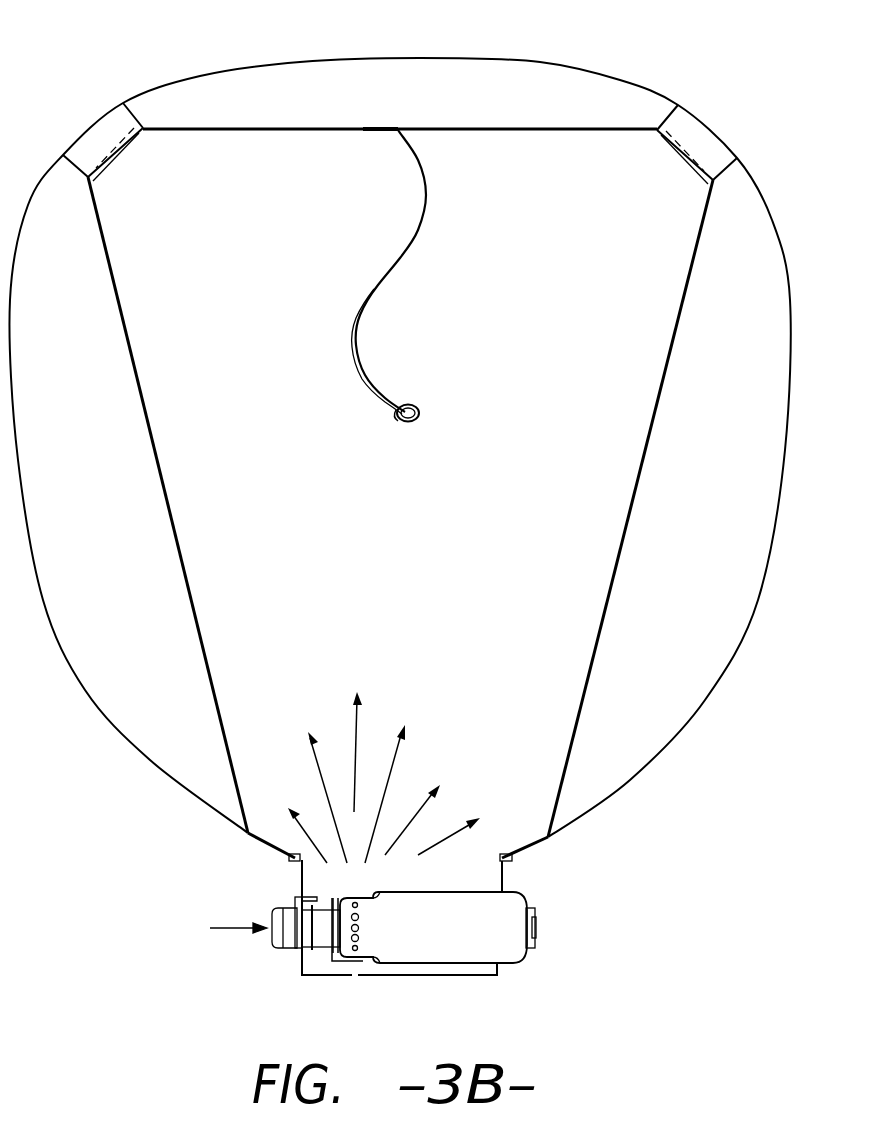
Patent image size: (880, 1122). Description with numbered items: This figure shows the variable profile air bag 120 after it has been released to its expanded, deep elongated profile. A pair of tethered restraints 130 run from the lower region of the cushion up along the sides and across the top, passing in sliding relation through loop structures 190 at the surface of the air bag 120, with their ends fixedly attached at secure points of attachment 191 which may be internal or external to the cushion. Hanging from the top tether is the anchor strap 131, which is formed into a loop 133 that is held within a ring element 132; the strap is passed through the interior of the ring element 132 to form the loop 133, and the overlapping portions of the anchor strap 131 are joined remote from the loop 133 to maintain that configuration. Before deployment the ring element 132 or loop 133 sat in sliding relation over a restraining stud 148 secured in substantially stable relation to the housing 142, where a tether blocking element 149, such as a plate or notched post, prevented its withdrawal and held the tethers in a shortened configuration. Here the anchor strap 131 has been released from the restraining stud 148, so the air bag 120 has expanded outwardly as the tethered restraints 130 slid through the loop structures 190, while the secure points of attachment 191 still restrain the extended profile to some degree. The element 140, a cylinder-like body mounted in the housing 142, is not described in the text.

The air bag 120 is at (728, 93).
The tethered restraints 130 is at (260, 127).
The anchor strap 131 is at (427, 220).
The ring element 132 is at (418, 406).
The loop 133 is at (392, 413).
The gas cylinder 140 is at (522, 952).
The housing 142 is at (467, 977).
The restraining stud 148 is at (306, 892).
The tether blocking element 149 is at (333, 897).
The loop structures 190 is at (135, 107).
The secure points of attachment 191 is at (248, 835).